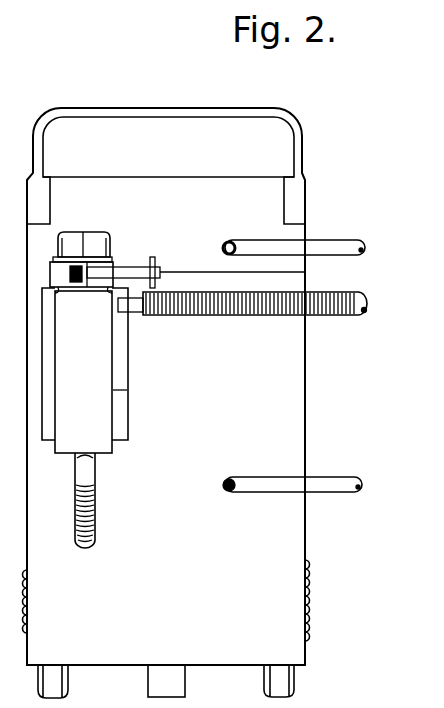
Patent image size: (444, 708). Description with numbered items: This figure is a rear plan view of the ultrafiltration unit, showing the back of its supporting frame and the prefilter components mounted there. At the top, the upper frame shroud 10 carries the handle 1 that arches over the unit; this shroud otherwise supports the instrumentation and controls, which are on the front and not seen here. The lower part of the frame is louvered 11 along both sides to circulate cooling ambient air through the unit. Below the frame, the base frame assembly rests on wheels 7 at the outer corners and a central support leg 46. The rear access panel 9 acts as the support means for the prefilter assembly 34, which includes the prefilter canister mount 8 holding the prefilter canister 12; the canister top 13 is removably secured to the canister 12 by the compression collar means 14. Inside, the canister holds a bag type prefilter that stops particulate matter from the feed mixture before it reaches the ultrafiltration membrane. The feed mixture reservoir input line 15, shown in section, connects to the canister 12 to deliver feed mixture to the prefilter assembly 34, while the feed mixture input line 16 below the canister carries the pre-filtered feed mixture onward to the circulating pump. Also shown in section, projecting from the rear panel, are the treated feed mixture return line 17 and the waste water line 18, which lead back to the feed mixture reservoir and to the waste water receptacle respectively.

The handle 1 is at (294, 122).
The wheels 7 is at (294, 683).
The prefilter canister mount 8 is at (125, 367).
The rear access panel 9 is at (173, 443).
The upper frame shroud 10 is at (171, 198).
The louvers 11 is at (0, 562).
The prefilter canister 12 is at (83, 370).
The canister top 13 is at (82, 232).
The compression collar means 14 is at (116, 266).
The feed mixture reservoir input line 15 is at (235, 317).
The feed mixture input line 16 is at (97, 513).
The treated feed mixture return line 17 is at (339, 477).
The waste water line 18 is at (331, 240).
The prefilter assembly 34 is at (128, 387).
The support leg 46 is at (148, 678).